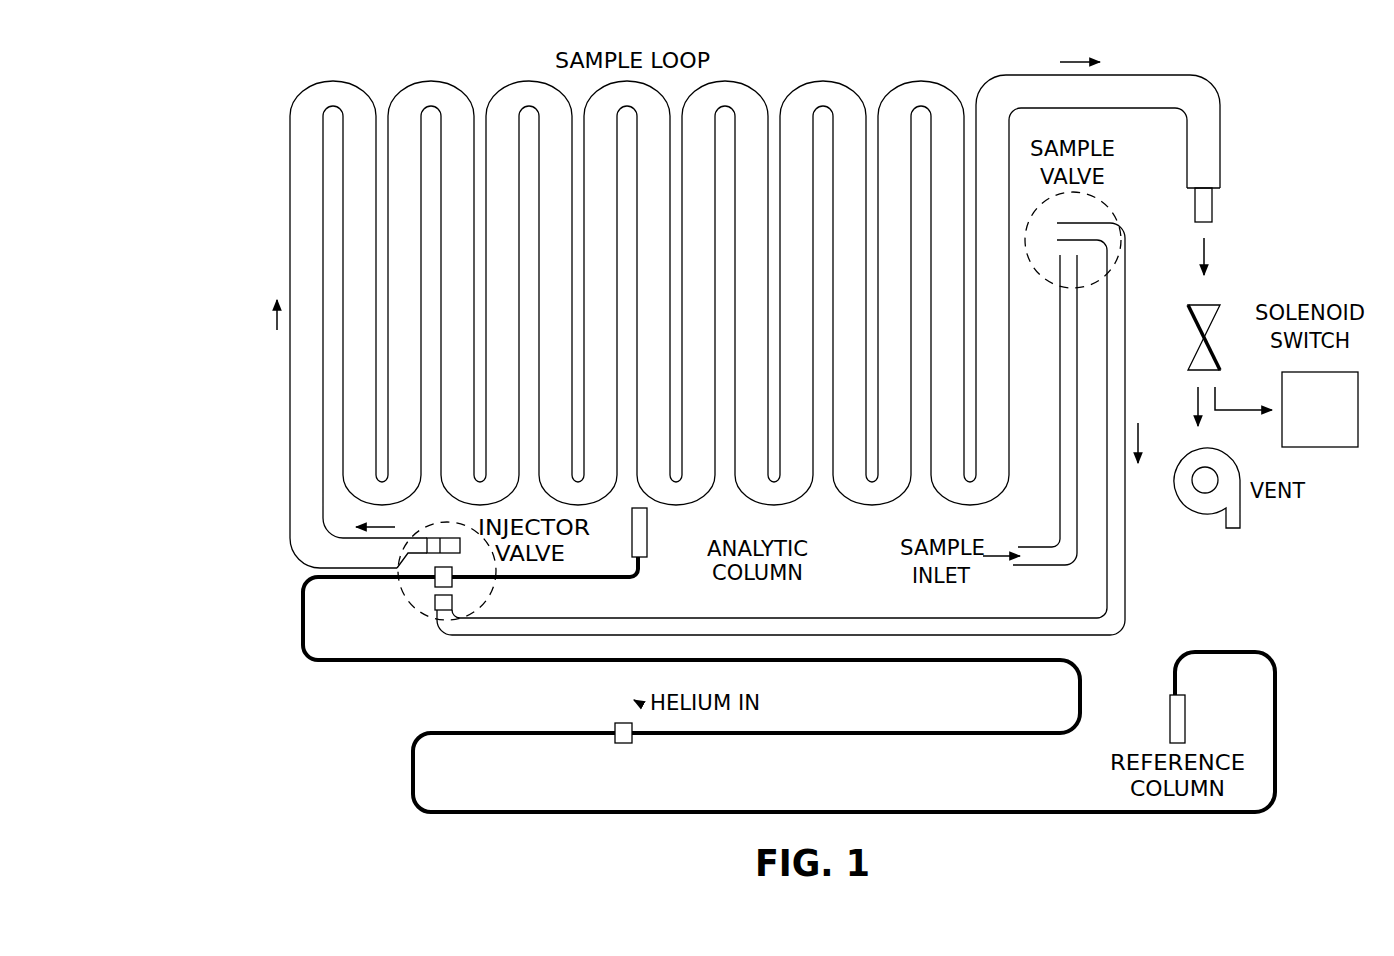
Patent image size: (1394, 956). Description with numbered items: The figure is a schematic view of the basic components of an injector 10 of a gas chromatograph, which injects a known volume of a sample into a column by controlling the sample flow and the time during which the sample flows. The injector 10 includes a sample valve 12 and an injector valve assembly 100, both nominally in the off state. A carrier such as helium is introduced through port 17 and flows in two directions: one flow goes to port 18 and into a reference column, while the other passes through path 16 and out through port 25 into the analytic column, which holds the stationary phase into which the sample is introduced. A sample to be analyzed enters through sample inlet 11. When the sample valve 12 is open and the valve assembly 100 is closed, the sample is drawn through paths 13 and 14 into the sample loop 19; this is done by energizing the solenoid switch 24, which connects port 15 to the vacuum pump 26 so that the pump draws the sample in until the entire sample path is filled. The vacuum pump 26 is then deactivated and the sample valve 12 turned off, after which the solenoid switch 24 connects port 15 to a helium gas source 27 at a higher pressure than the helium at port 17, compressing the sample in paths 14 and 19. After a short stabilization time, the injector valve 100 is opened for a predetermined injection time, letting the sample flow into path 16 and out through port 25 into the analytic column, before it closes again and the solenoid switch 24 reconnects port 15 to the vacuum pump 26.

The injector 10 is at (236, 119).
The sample inlet 11 is at (1025, 566).
The sample valve 12 is at (1098, 200).
The path 13 is at (1057, 340).
The path 14 is at (1125, 315).
The port 15 is at (1212, 205).
The path 16 is at (525, 580).
The port 17 is at (622, 722).
The port 18 is at (1185, 720).
The sample loop 19 is at (292, 205).
The solenoid switch 24 is at (1222, 358).
The port 25 is at (647, 533).
The vacuum pump 26 is at (1178, 485).
The helium gas source 27 is at (1318, 445).
The injector valve assembly 100 is at (416, 617).